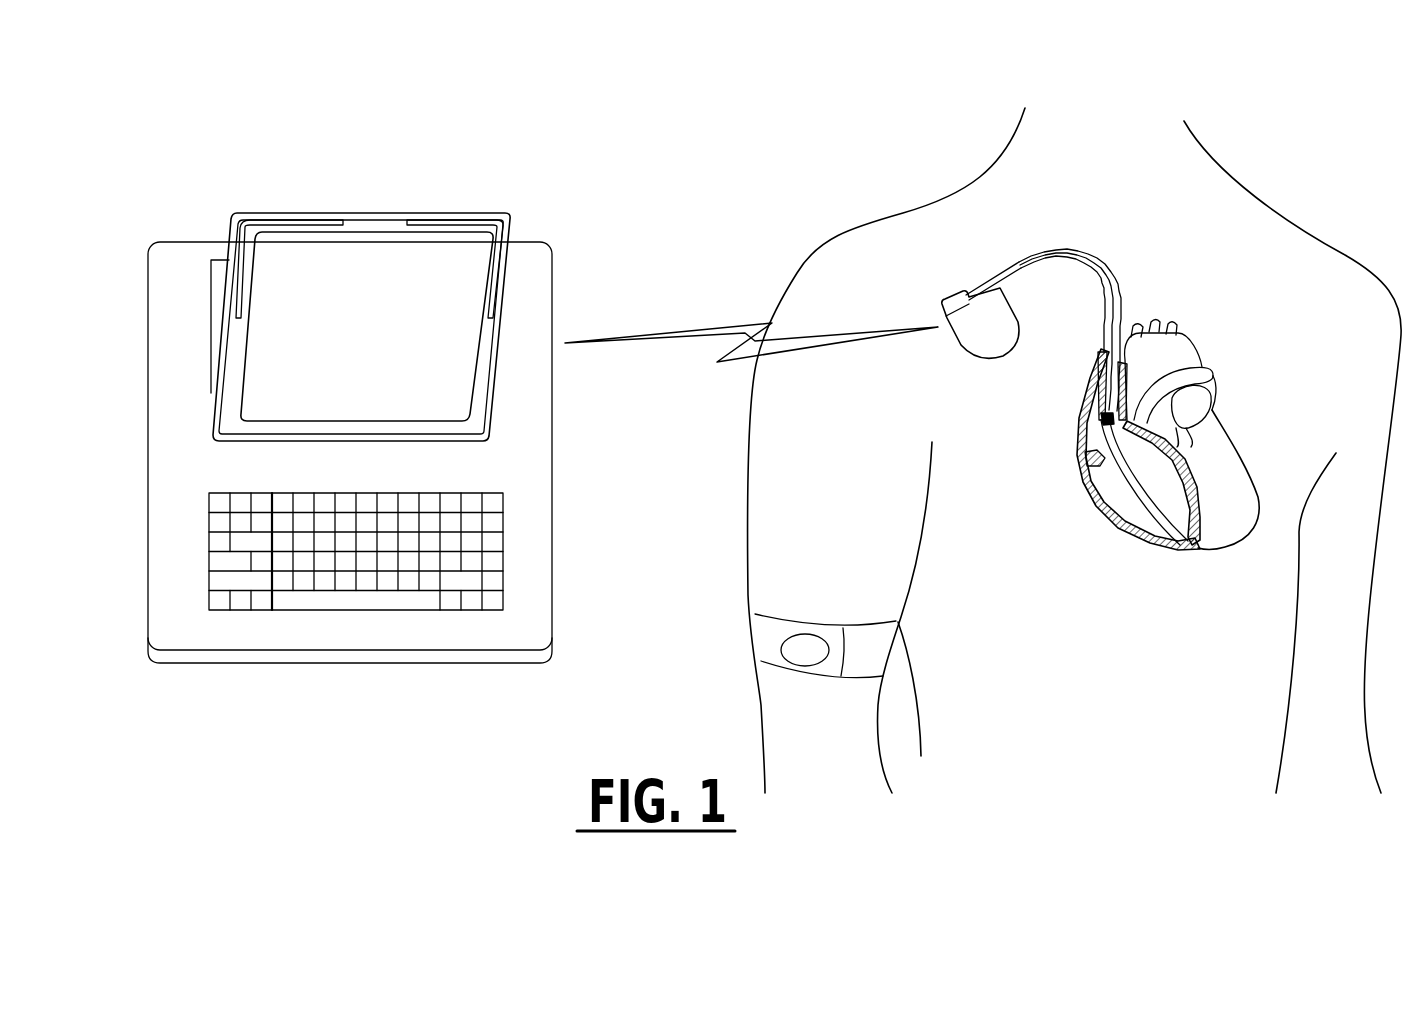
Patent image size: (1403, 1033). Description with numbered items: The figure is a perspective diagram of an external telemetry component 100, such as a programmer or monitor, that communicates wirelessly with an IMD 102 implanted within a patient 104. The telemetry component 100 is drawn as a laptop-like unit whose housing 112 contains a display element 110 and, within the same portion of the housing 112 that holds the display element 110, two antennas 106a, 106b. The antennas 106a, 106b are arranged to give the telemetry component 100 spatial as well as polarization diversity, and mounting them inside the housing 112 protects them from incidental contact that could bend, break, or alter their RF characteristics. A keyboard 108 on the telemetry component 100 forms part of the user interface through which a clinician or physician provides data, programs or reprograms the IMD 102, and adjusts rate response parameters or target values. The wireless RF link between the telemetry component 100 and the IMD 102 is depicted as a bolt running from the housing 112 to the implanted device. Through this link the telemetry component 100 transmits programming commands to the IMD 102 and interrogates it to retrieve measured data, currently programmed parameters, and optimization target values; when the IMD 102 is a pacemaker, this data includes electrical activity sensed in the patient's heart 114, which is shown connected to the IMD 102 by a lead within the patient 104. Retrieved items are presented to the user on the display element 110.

The telemetry component 100 is at (315, 95).
The IMD 102 is at (982, 365).
The patient 104 is at (825, 157).
The antenna 106a is at (240, 223).
The antenna 106b is at (513, 220).
The keyboard 108 is at (192, 570).
The display element 110 is at (362, 206).
The housing 112 is at (502, 327).
The heart 114 is at (1268, 485).